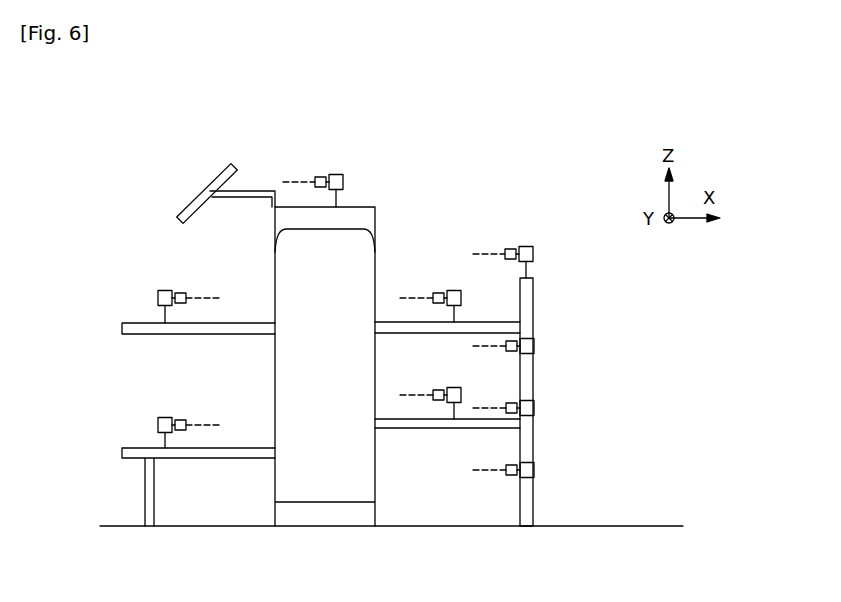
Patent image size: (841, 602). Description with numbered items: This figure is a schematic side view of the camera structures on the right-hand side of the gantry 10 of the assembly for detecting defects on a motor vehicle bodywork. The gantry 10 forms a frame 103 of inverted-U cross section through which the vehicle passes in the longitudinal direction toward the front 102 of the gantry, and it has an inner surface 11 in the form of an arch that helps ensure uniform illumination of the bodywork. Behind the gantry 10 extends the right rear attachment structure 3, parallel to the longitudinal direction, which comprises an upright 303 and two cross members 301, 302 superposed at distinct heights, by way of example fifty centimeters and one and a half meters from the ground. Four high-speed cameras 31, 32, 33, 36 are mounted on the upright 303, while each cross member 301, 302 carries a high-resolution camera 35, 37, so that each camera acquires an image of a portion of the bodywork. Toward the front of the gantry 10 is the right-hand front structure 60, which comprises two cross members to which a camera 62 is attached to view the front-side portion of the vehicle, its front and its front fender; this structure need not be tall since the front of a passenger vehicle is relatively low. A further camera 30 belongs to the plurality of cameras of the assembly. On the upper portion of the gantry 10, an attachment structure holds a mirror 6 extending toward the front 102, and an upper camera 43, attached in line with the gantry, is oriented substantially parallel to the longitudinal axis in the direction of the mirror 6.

The right rear attachment structure 3 is at (557, 302).
The mirror 6 is at (197, 198).
The gantry 10 is at (300, 206).
The inner surface 11 is at (357, 243).
The camera 30 is at (158, 298).
The high-speed camera 31 is at (536, 339).
The high-speed camera 32 is at (536, 408).
The high-speed camera 33 is at (536, 470).
The high-resolution camera 35 is at (458, 290).
The high-speed camera 36 is at (535, 252).
The high-resolution camera 37 is at (456, 387).
The upper camera 43 is at (335, 173).
The front structure 60 is at (237, 448).
The camera 62 is at (165, 417).
The front of gantry 102 is at (170, 260).
The frame 103 is at (655, 503).
The cross member 301 is at (390, 330).
The cross member 302 is at (412, 428).
The upright 303 is at (536, 366).